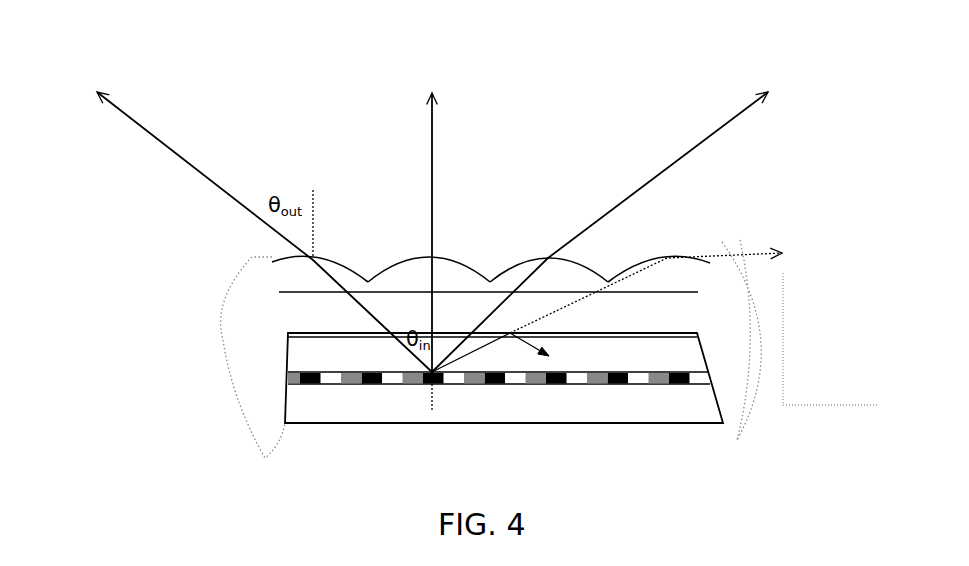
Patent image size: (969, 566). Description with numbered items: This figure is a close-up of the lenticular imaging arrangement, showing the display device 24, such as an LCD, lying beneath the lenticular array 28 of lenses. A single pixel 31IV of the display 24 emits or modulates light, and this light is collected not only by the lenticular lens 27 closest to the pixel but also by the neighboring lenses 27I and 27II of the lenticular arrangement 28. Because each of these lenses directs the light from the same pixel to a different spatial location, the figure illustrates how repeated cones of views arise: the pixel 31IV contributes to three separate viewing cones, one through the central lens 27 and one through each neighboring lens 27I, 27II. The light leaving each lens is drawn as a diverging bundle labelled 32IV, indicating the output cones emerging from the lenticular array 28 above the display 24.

The lenticular lens 27 is at (404, 257).
The neighboring lens 27I is at (341, 259).
The neighboring lens 27II is at (517, 259).
The lenticular array 28 is at (731, 313).
The display device 24 is at (731, 382).
The pixel 31IV is at (417, 418).
The light cone 32IV is at (430, 203).